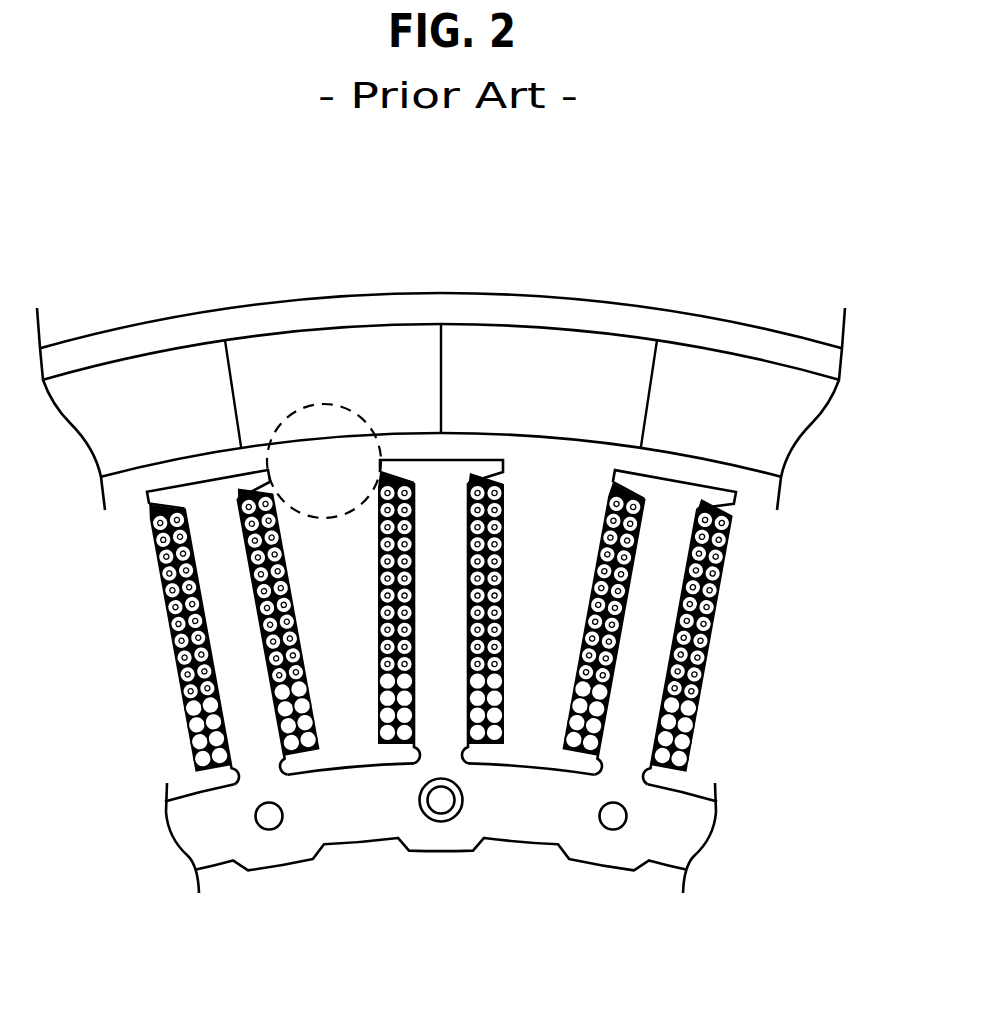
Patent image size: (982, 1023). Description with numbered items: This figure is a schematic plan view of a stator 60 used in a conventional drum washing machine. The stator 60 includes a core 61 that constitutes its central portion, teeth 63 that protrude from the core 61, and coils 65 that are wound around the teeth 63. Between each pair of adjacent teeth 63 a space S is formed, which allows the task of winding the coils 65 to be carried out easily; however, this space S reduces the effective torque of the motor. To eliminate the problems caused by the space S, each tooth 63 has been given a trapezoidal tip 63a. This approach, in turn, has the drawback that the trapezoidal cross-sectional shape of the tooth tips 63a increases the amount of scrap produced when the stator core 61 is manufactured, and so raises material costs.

The stator 60 is at (698, 311).
The core 61 is at (683, 826).
The teeth 63 is at (660, 622).
The trapezoidal tip 63a is at (668, 494).
The coils 65 is at (690, 694).
The space S is at (323, 405).